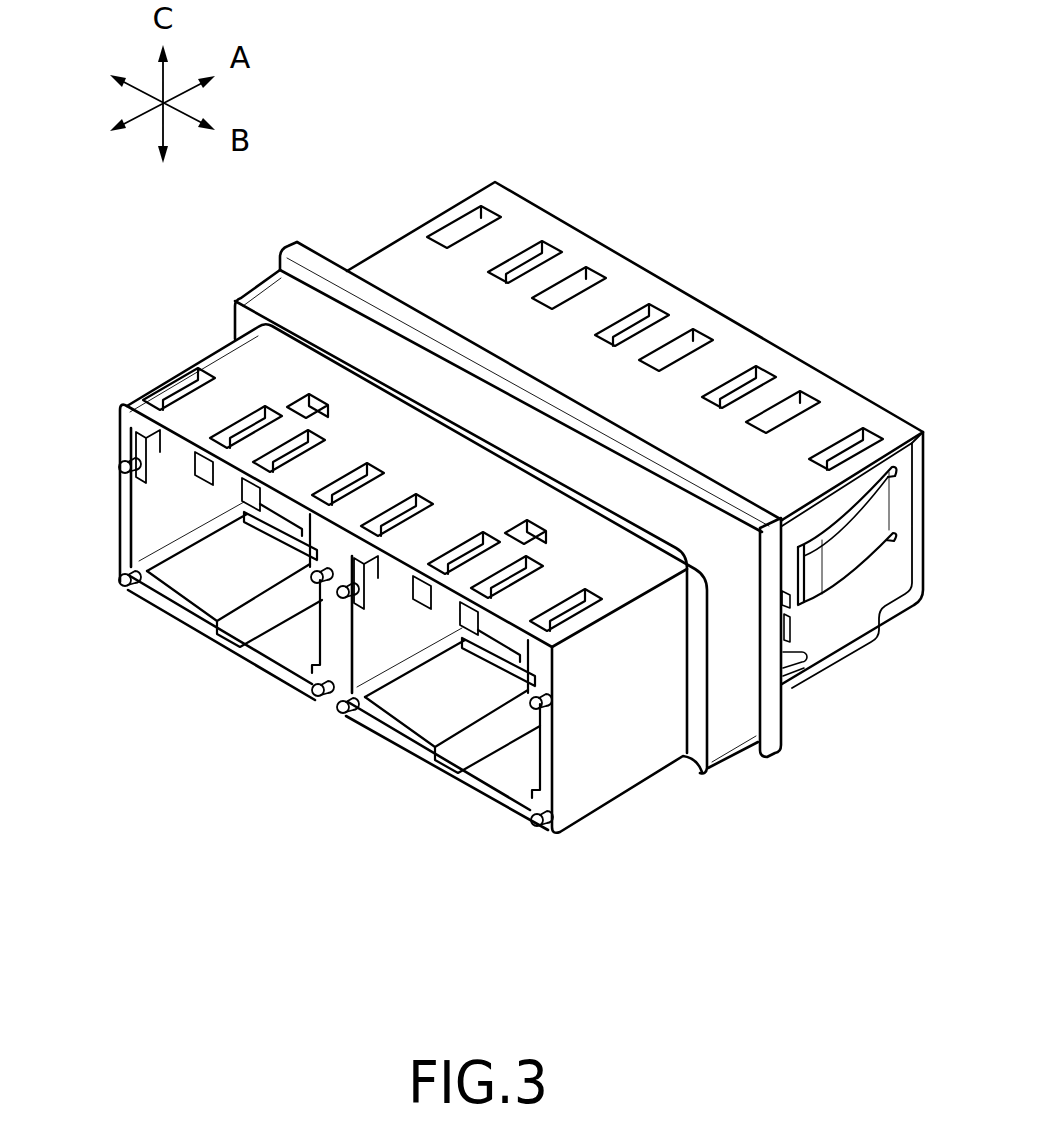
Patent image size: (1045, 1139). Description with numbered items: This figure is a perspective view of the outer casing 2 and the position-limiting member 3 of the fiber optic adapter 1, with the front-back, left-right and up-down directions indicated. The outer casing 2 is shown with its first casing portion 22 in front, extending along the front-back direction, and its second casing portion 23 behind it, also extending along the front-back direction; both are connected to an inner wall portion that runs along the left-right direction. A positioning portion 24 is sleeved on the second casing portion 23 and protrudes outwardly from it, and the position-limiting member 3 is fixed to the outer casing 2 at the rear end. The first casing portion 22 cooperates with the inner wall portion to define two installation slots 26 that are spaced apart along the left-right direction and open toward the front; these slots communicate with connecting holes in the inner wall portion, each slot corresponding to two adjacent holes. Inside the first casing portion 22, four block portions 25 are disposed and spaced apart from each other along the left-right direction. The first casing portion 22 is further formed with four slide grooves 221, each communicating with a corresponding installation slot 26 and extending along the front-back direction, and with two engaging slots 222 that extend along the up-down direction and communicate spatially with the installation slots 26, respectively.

The fiber optic adapter 1 is at (604, 159).
The outer casing 2 is at (740, 798).
The first casing portion 22 is at (638, 767).
The slide grooves 221 is at (228, 478).
The engaging slots 222 is at (297, 403).
The second casing portion 23 is at (412, 257).
The positioning portion 24 is at (775, 715).
The block portions 25 is at (275, 528).
The installation slots 26 is at (184, 588).
The position-limiting member 3 is at (848, 623).